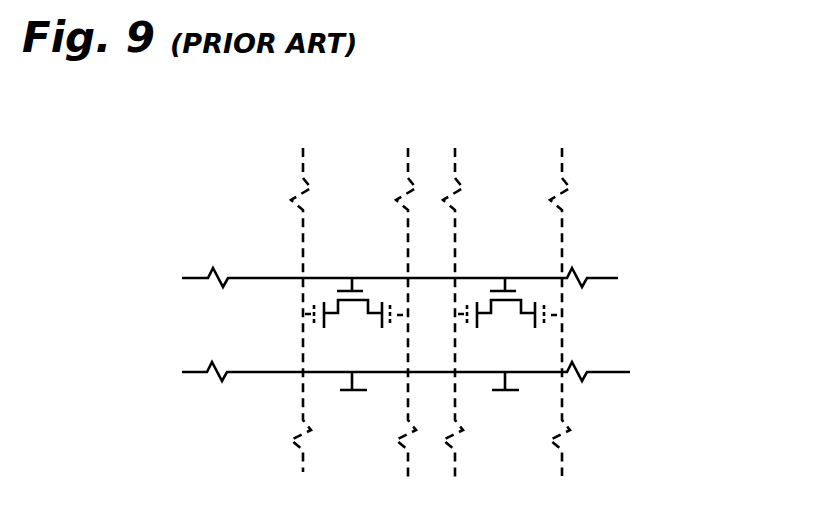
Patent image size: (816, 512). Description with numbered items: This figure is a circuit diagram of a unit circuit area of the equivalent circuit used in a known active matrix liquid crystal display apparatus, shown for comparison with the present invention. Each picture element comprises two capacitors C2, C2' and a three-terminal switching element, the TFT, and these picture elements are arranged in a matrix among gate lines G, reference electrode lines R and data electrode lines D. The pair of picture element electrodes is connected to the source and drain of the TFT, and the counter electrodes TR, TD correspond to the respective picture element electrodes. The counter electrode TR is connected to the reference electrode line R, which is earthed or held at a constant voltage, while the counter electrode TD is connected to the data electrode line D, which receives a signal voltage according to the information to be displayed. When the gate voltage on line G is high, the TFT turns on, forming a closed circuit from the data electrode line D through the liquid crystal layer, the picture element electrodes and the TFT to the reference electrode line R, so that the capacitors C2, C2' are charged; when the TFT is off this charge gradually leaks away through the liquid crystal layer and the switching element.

The gate line G is at (403, 301).
The reference electrode line R is at (379, 295).
The data electrode line D is at (486, 295).
The thin film transistor TFT is at (372, 283).
The counter electrode TR is at (307, 322).
The counter electrode TD is at (392, 311).
The capacitor C2 is at (337, 365).
The capacitor C2' is at (444, 361).